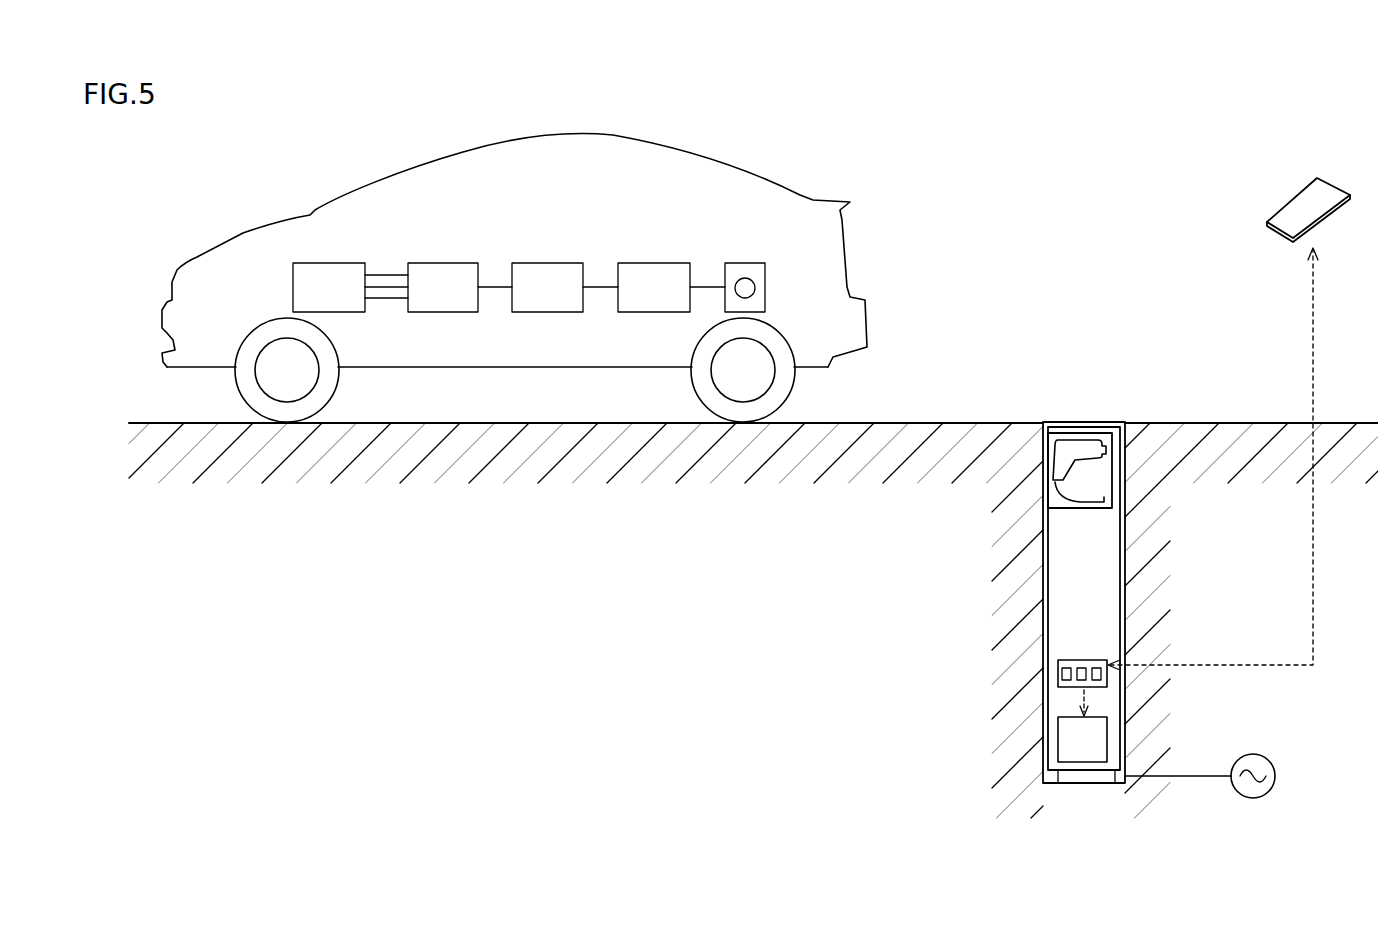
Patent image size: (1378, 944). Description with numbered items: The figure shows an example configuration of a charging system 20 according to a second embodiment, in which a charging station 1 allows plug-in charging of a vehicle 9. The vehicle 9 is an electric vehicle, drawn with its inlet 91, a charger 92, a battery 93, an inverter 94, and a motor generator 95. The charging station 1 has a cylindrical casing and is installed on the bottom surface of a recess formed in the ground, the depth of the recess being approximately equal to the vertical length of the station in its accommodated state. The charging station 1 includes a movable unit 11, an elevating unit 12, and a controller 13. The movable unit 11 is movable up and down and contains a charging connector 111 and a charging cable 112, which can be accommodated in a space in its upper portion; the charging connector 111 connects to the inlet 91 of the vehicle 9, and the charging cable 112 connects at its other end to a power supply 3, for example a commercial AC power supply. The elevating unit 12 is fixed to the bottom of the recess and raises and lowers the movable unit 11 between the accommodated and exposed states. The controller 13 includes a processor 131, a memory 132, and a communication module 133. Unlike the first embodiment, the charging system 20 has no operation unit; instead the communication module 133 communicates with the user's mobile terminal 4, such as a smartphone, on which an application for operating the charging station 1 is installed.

The vehicle 9 is at (514, 278).
The motor generator 95 is at (323, 262).
The inverter 94 is at (440, 262).
The battery 93 is at (543, 262).
The charger 92 is at (650, 262).
The inlet 91 is at (743, 262).
The charging system 20 is at (997, 300).
The charging station 1 is at (1100, 402).
The movable unit 11 is at (1108, 422).
The charging connector 111 is at (1083, 458).
The charging cable 112 is at (1082, 502).
The controller 13 is at (1086, 673).
The processor 131 is at (1068, 682).
The memory 132 is at (1083, 667).
The communication module 133 is at (1097, 667).
The elevating unit 12 is at (1107, 742).
The power supply 3 is at (1268, 760).
The mobile terminal 4 is at (1317, 176).